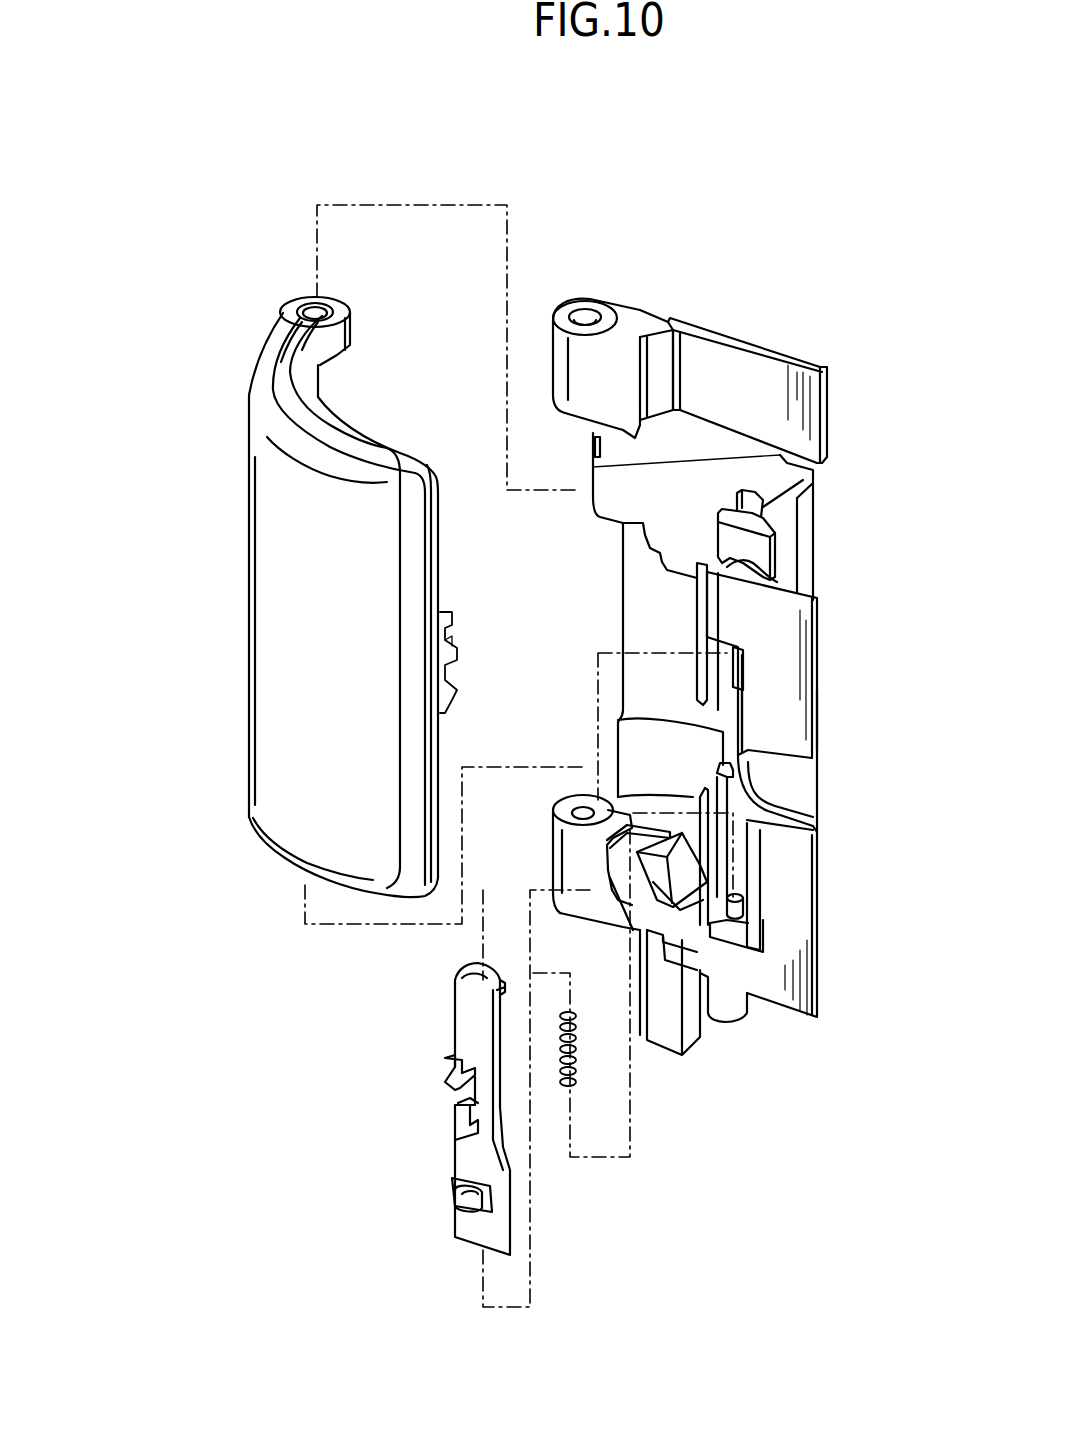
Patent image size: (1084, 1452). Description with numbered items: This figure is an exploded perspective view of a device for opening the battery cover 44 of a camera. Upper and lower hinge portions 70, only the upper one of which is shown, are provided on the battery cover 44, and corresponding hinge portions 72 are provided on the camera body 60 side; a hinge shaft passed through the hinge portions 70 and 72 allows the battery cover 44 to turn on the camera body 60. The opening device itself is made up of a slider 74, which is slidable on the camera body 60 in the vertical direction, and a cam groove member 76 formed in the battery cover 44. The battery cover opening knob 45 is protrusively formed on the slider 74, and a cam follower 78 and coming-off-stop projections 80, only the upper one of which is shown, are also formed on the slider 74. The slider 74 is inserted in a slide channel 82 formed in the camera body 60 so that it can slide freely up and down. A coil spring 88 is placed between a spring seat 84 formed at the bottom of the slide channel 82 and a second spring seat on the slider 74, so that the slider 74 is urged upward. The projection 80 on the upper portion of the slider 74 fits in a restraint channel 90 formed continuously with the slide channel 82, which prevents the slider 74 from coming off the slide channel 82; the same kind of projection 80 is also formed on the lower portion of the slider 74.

The battery cover 44 is at (283, 633).
The hinge portion 70 is at (313, 317).
The cam groove member 76 is at (450, 668).
The hinge portion 72 is at (590, 303).
The camera body 60 is at (720, 365).
The restraint channel 90 is at (740, 662).
The slide channel 82 is at (738, 693).
The spring seat 84 is at (743, 895).
The coil spring 88 is at (577, 1045).
The slider 74 is at (458, 1153).
The coming-off-stop projection 80 is at (505, 977).
The cam follower 78 is at (447, 1058).
The battery cover opening knob 45 is at (452, 1207).